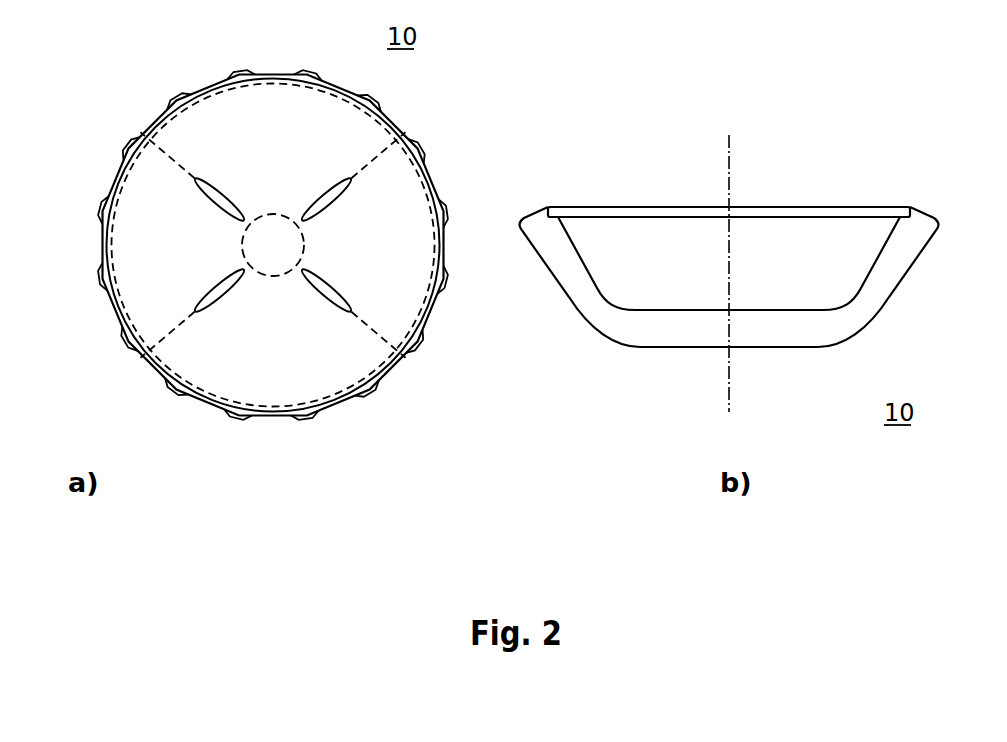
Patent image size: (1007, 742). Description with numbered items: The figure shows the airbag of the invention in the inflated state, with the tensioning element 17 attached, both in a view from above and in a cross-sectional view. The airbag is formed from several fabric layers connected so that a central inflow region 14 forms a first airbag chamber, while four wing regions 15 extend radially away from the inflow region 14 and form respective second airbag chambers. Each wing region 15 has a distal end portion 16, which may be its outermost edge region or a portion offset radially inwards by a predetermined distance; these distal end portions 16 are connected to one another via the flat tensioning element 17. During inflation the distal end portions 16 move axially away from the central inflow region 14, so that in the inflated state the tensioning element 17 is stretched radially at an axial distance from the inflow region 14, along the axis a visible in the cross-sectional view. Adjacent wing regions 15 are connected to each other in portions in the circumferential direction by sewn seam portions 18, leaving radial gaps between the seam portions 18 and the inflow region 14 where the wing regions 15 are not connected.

In FIG. 2a, the central inflow region 14 is at (275, 246).
In FIG. 2a, the wing regions 15 is at (477, 368).
In FIG. 2a, the distal end portions 16 is at (290, 78).
In FIG. 2b, the tensioning element 17 is at (788, 207).
In FIG. 2a, the seam portions 18 is at (192, 175).
In FIG. 2b, the axis a is at (729, 399).